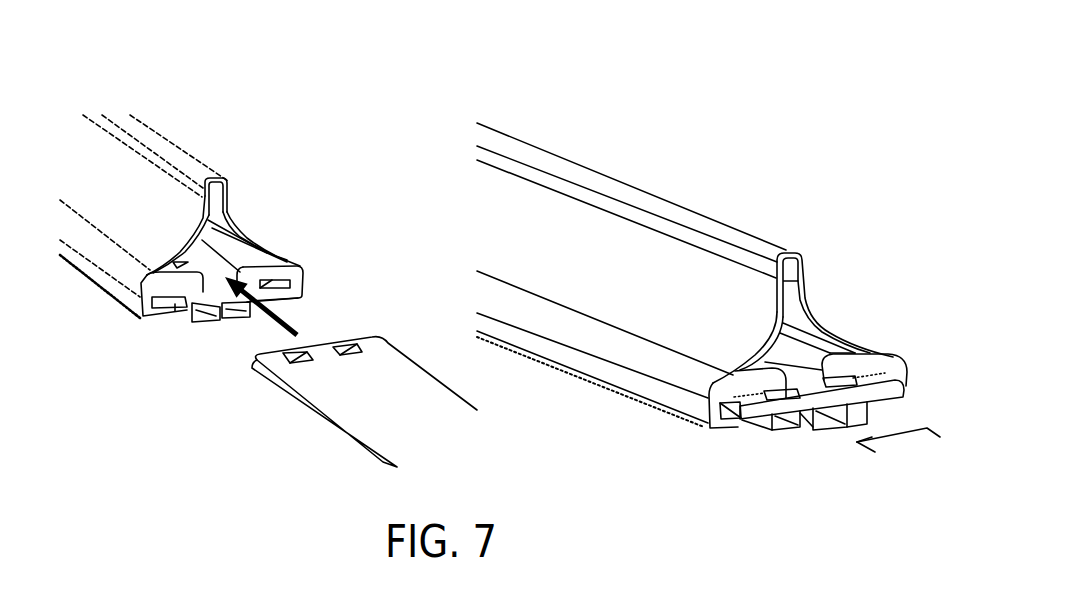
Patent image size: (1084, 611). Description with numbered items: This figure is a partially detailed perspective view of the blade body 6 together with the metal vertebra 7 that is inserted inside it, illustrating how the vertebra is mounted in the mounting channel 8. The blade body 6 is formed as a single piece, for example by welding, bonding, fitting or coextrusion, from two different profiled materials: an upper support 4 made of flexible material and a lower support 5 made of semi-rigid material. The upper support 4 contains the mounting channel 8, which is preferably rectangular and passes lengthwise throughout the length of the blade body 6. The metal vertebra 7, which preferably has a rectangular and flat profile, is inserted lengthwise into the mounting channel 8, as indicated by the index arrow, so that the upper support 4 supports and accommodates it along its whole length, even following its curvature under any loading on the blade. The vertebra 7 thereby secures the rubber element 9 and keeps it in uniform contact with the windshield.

The upper support 4 is at (158, 283).
The lower support 5 is at (192, 322).
The blade body 6 is at (181, 127).
The metal vertebra 7 is at (380, 358).
The mounting channel 8 is at (273, 283).
The rubber element 9 is at (893, 436).